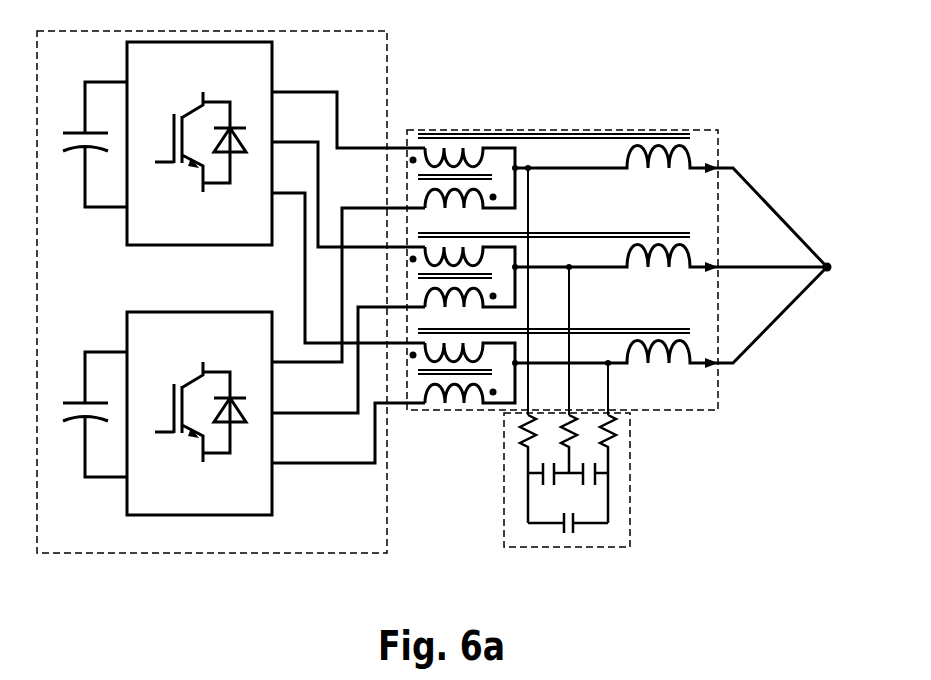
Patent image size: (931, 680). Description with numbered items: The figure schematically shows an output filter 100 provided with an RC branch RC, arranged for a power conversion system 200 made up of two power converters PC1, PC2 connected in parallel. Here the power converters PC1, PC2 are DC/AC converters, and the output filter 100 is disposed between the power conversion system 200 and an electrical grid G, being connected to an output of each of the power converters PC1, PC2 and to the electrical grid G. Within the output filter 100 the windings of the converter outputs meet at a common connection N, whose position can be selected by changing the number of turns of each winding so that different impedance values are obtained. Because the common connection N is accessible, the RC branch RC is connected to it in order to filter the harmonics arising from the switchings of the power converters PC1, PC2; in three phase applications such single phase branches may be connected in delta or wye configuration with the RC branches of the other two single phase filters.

The power conversion system 200 is at (388, 83).
The output filter 100 is at (718, 155).
The power converter PC1 is at (245, 79).
The power converter PC2 is at (247, 472).
The common connection N is at (603, 351).
The electrical grid G is at (841, 267).
The RC branch RC is at (630, 487).